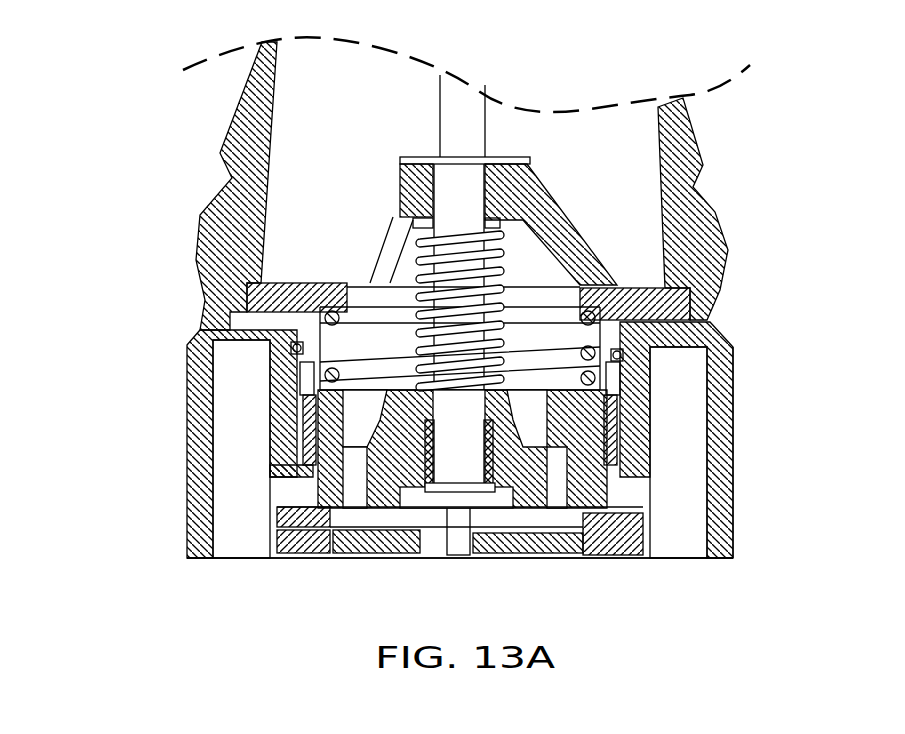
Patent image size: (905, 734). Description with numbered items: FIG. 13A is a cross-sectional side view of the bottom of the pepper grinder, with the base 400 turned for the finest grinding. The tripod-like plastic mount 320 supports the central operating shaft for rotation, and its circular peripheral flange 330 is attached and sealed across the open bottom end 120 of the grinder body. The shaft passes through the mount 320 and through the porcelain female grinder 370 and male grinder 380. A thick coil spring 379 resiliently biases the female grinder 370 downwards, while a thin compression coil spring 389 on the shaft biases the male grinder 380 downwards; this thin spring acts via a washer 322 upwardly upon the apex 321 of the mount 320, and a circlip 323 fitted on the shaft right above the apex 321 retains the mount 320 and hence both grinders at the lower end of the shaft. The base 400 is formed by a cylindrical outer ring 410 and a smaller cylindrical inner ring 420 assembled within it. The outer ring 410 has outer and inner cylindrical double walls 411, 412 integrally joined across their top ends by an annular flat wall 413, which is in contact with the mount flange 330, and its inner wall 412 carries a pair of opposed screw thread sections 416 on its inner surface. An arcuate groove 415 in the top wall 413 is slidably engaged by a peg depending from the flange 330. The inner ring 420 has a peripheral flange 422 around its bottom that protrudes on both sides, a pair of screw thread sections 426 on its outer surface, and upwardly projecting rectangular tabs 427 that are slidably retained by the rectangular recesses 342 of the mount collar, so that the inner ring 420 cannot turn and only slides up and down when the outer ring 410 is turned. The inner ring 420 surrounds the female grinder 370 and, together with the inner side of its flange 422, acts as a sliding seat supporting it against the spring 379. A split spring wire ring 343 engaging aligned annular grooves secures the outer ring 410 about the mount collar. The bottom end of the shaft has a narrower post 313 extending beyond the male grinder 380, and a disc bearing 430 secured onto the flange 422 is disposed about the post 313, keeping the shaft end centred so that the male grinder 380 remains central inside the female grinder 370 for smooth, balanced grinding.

The bottom end of the body 120 is at (724, 233).
The post 313 is at (460, 537).
The mount 320 is at (553, 228).
The apex 321 is at (428, 162).
The washer 322 is at (417, 227).
The circlip 323 is at (497, 161).
The peripheral flange 330 is at (271, 283).
The rectangular recesses 342 is at (292, 353).
The split spring wire ring 343 is at (250, 312).
The female grinder 370 is at (345, 437).
The coil spring 379 is at (392, 373).
The male grinder 380 is at (373, 502).
The compression coil spring 389 is at (495, 266).
The base 400 is at (157, 383).
The outer ring 410 is at (738, 484).
The outer wall 411 is at (734, 441).
The inner wall 412 is at (633, 441).
The annular flat wall 413 is at (684, 332).
The arcuate groove 415 is at (253, 330).
The screw thread sections 416 is at (300, 480).
The inner ring 420 is at (560, 543).
The peripheral flange 422 is at (610, 520).
The screw thread sections 426 is at (325, 453).
The rectangular tabs 427 is at (303, 403).
The disc bearing 430 is at (593, 553).